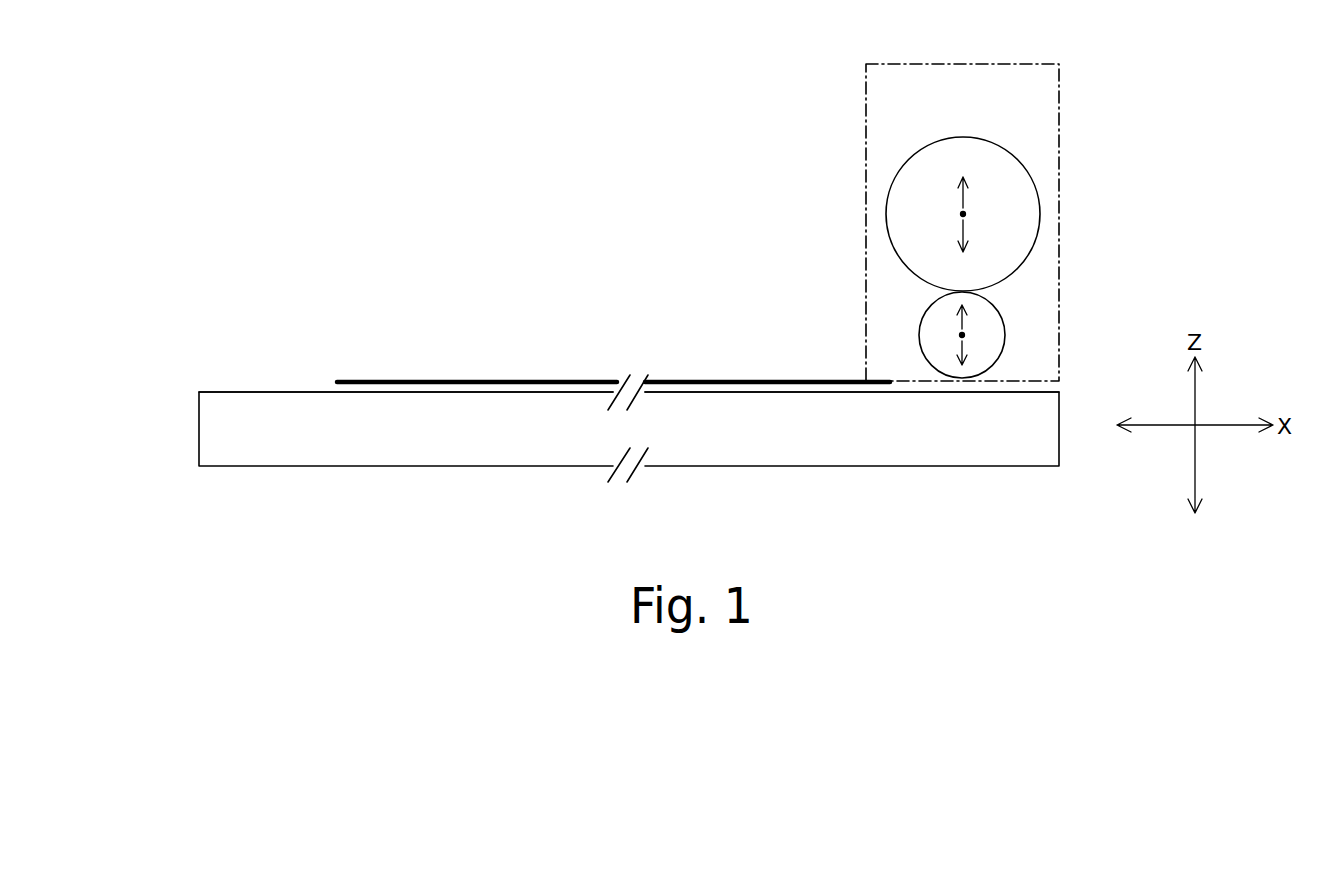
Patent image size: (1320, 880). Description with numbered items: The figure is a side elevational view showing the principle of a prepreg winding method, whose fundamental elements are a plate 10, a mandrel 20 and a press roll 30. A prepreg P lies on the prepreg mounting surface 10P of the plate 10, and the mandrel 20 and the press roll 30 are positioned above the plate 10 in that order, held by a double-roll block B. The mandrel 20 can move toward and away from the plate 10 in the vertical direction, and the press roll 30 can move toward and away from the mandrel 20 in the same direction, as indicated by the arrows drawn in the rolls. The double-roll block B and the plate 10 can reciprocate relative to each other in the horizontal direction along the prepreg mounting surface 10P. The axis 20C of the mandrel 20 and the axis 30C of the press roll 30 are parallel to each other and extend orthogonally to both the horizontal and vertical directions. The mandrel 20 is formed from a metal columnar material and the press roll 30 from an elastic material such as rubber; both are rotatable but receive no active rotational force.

The plate 10 is at (783, 443).
The prepreg mounting surface 10P is at (278, 392).
The prepreg P is at (463, 382).
The double-roll block B is at (1037, 85).
The press roll 30 is at (1017, 212).
The axis of the press roll 30C is at (963, 214).
The mandrel 20 is at (1002, 336).
The axis of the mandrel 20C is at (962, 335).